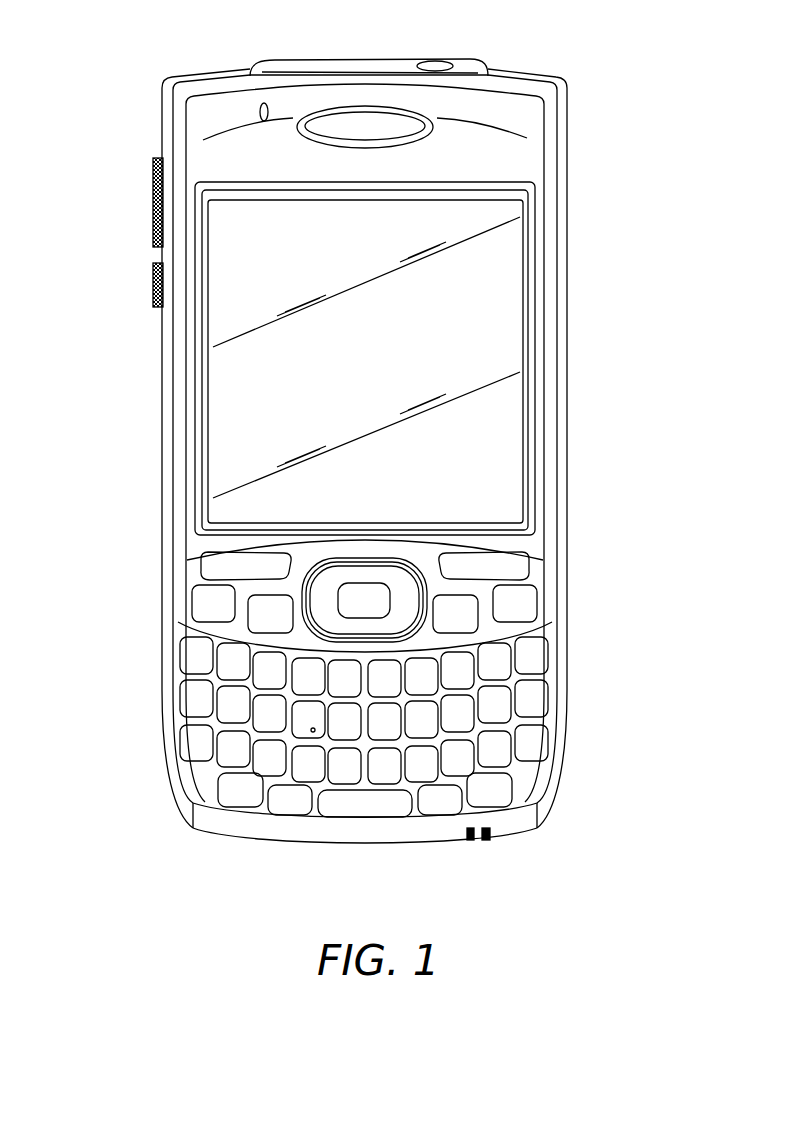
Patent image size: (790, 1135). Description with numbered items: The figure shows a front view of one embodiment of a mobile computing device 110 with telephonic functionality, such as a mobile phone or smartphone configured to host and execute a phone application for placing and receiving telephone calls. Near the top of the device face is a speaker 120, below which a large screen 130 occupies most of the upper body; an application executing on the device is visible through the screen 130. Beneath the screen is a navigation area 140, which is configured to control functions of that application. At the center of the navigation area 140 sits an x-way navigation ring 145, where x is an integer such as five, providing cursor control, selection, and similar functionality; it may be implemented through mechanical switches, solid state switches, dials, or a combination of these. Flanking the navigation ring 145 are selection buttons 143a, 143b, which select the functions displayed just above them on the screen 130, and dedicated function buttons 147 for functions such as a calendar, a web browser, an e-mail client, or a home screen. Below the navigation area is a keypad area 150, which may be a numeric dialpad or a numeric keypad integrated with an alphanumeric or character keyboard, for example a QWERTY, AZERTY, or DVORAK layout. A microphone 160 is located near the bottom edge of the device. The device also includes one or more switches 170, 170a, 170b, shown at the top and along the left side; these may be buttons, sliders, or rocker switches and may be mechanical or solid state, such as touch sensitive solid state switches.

The mobile computing device 110 is at (601, 86).
The speaker 120 is at (377, 139).
The screen 130 is at (384, 370).
The navigation area 140 is at (592, 552).
The selection button 143a is at (242, 572).
The selection button 143b is at (473, 568).
The navigation ring 145 is at (379, 613).
The dedicated function buttons 147 is at (277, 618).
The keypad area 150 is at (592, 800).
The microphone 160 is at (488, 845).
The switch 170 is at (434, 55).
The switch 170a is at (152, 199).
The switch 170b is at (152, 286).